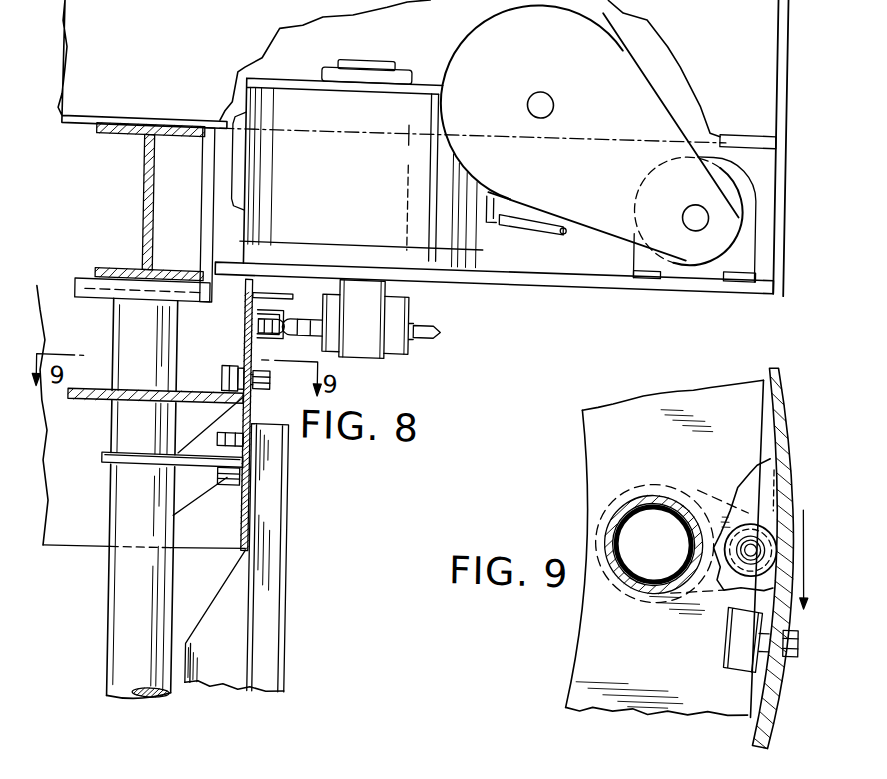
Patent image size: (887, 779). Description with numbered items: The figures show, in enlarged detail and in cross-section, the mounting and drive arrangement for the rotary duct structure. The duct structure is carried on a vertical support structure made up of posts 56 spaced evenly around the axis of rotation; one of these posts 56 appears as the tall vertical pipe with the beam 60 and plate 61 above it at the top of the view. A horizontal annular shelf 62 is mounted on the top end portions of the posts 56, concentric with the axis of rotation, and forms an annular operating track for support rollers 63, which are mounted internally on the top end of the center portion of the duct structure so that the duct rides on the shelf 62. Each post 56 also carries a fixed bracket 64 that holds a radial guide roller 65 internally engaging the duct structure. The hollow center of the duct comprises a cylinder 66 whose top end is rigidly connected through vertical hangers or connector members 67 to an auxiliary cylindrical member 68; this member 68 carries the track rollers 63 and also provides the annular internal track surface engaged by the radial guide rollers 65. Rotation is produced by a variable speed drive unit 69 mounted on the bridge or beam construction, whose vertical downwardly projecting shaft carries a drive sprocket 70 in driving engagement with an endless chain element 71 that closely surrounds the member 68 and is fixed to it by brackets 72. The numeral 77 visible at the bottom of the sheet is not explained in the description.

In FIG. 8, the post 56 is at (128, 651).
In FIG. 9, the post 56 is at (627, 537).
In FIG. 8, the I-beam 60 is at (147, 173).
In FIG. 8, the platform plate 61 is at (178, 47).
In FIG. 8, the horizontal annular shelf 62 is at (142, 396).
In FIG. 9, the horizontal annular shelf 62 is at (608, 432).
In FIG. 8, the support roller 63 is at (235, 363).
In FIG. 9, the support roller 63 is at (752, 634).
In FIG. 8, the bracket 64 is at (112, 453).
In FIG. 9, the bracket 64 is at (746, 466).
In FIG. 8, the radial guide roller 65 is at (229, 429).
In FIG. 9, the radial guide roller 65 is at (738, 538).
In FIG. 9, the cylinder 66 is at (800, 437).
In FIG. 8, the vertical hanger 67 is at (294, 596).
In FIG. 8, the auxiliary cylindrical member 68 is at (258, 401).
In FIG. 8, the variable speed drive unit 69 is at (421, 45).
In FIG. 8, the drive sprocket 70 is at (423, 311).
In FIG. 8, the endless chain element 71 is at (290, 308).
In FIG. 8, the bracket 72 is at (263, 298).
In FIG. 8, the sheet numeral 77 is at (226, 769).